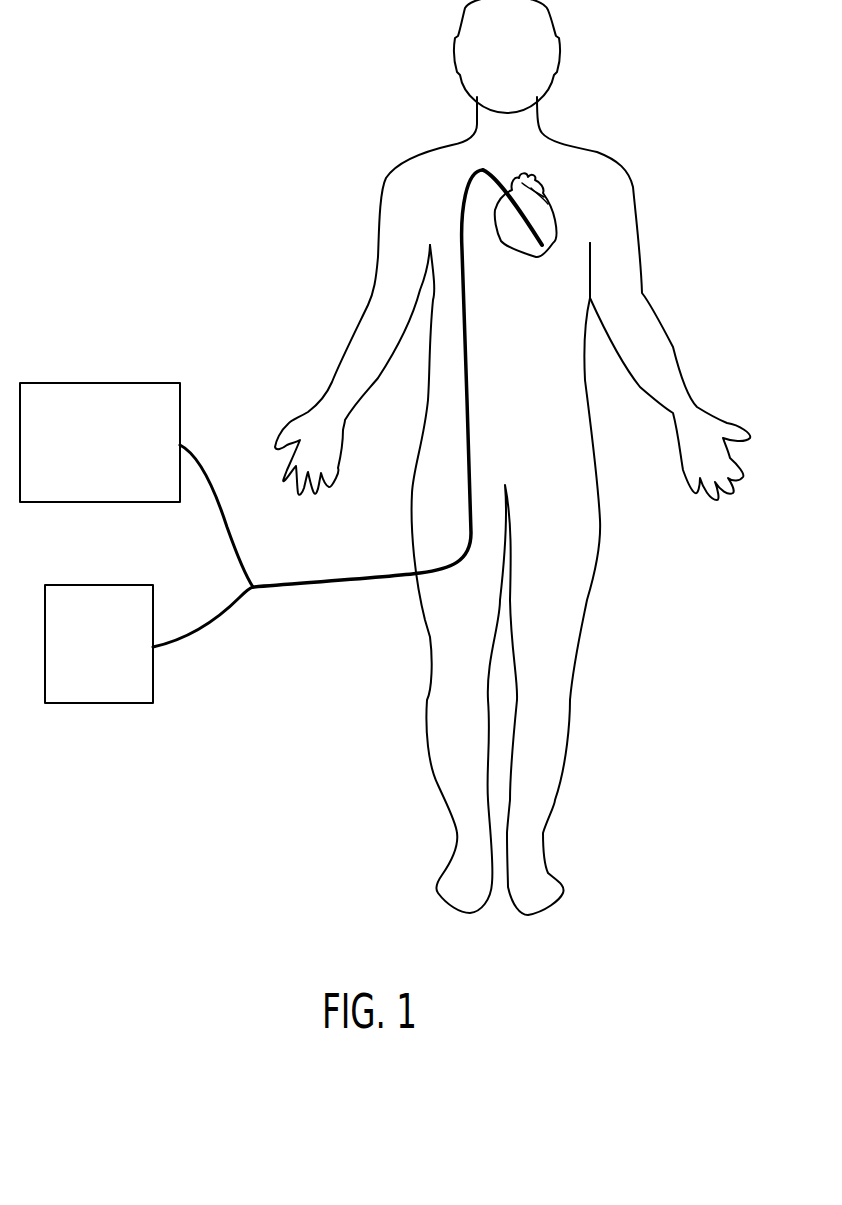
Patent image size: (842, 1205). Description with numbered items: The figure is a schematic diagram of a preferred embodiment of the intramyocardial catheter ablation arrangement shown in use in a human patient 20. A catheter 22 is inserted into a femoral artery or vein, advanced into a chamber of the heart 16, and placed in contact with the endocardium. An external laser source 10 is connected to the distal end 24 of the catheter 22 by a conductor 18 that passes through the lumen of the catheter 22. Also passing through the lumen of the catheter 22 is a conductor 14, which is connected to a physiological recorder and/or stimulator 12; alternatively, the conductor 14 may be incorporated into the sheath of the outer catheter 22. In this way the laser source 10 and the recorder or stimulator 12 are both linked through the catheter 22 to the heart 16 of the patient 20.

The external laser source 10 is at (140, 585).
The physiological recorder and/or stimulator 12 is at (140, 383).
The conductor 14 is at (202, 462).
The heart 16 is at (552, 210).
The conductor 18 is at (201, 633).
The human patient 20 is at (568, 145).
The catheter 22 is at (320, 578).
The distal end 24 is at (543, 242).